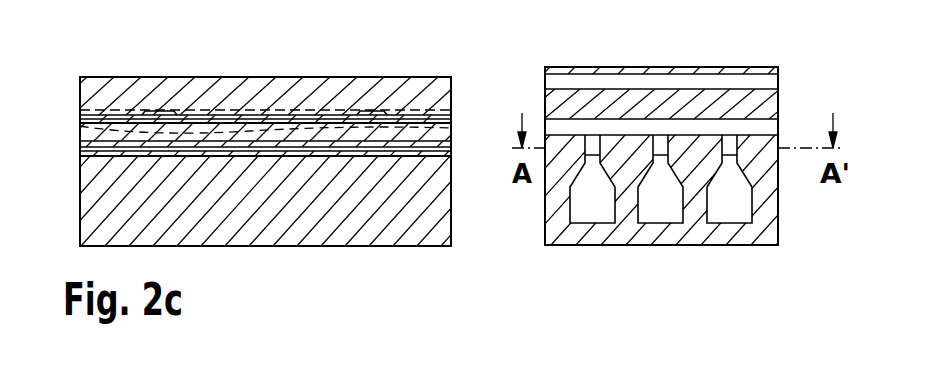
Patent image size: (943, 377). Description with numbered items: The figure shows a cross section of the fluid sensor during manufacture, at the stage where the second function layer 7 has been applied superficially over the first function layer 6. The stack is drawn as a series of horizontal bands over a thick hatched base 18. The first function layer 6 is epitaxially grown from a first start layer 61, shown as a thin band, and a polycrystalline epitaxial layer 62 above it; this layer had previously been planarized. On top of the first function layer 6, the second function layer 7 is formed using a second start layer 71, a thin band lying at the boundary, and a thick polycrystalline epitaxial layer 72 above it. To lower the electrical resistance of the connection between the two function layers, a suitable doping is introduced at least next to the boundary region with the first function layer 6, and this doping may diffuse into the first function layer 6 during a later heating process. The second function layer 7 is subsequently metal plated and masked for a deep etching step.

The second function layer 7 is at (259, 65).
The first function layer 6 is at (265, 135).
The substrate 18 is at (80, 158).
The polycrystalline epitaxial layer 72 is at (406, 90).
The second start layer 71 is at (442, 117).
The polycrystalline epitaxial layer 62 is at (442, 133).
The first start layer 61 is at (442, 146).